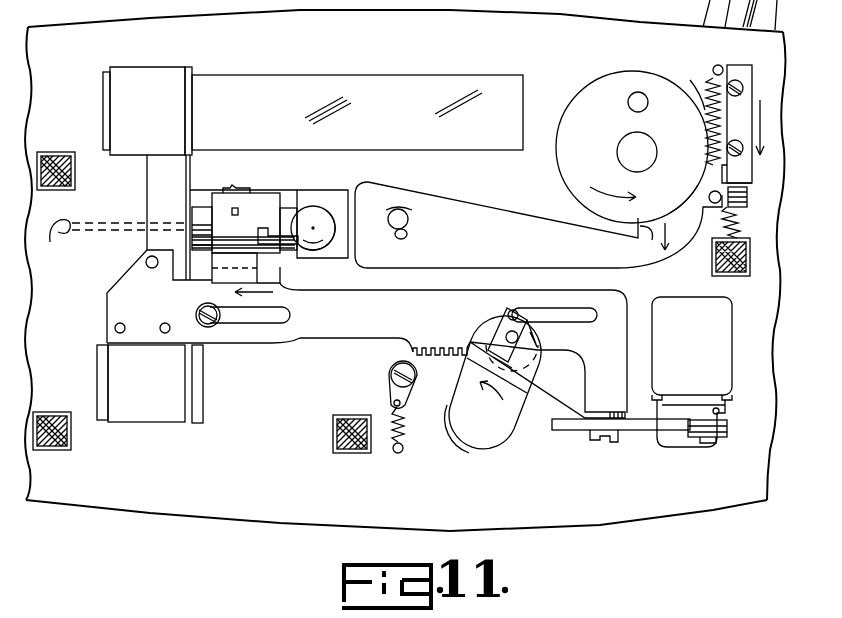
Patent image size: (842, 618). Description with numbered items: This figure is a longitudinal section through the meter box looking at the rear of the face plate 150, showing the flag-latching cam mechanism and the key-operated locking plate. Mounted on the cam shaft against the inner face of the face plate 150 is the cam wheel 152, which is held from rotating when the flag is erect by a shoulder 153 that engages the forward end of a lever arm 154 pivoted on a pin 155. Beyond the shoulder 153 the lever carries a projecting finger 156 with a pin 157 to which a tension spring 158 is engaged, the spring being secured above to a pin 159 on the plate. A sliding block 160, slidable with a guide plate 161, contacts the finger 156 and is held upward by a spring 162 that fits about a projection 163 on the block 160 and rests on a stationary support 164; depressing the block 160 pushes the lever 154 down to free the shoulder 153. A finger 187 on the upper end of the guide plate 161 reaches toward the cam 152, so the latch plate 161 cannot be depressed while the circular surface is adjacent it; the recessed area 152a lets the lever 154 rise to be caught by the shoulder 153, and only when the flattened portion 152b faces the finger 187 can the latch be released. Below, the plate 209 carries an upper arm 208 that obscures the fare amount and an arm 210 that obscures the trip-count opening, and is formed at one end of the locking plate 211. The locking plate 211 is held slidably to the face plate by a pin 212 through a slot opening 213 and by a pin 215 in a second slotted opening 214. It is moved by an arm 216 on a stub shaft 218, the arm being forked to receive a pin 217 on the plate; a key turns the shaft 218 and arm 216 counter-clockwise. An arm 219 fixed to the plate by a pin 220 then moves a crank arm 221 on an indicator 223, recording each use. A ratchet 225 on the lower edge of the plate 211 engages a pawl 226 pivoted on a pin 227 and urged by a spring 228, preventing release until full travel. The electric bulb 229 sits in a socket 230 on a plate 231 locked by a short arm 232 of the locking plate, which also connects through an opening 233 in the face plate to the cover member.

The face plate 150 is at (678, 34).
The cam wheel 152 is at (594, 86).
The recessed area 152a is at (686, 198).
The flattened portion 152b is at (703, 147).
The shoulder 153 is at (647, 240).
The lever arm 154 is at (530, 227).
The pin 155 is at (390, 213).
The projecting finger 156 is at (728, 224).
The pin 157 is at (708, 202).
The tension spring 158 is at (712, 125).
The pin 159 is at (713, 70).
The sliding block 160 is at (748, 183).
The guide plate 161 is at (745, 127).
The spring 162 is at (745, 228).
The projection 163 is at (744, 202).
The stationary support 164 is at (740, 277).
The finger 187 is at (703, 88).
The upper arm 208 is at (173, 108).
The plate 209 is at (158, 197).
The arm 210 is at (173, 387).
The locking plate 211 is at (363, 325).
The pin 212 is at (202, 308).
The slot opening 213 is at (286, 313).
The second slotted opening 214 is at (588, 316).
The pin 215 is at (510, 313).
The arm 216 is at (522, 368).
The pin 217 is at (520, 334).
The stub shaft 218 is at (487, 427).
The arm 219 is at (642, 428).
The pin 220 is at (593, 438).
The crank arm 221 is at (722, 435).
The indicator 223 is at (722, 383).
The ratchet 225 is at (443, 351).
The pawl 226 is at (402, 364).
The pin 227 is at (391, 385).
The spring 228 is at (403, 432).
The electric bulb 229 is at (318, 212).
The socket 230 is at (270, 212).
The plate 231 is at (241, 200).
The short arm 232 is at (267, 273).
The opening 233 is at (357, 190).